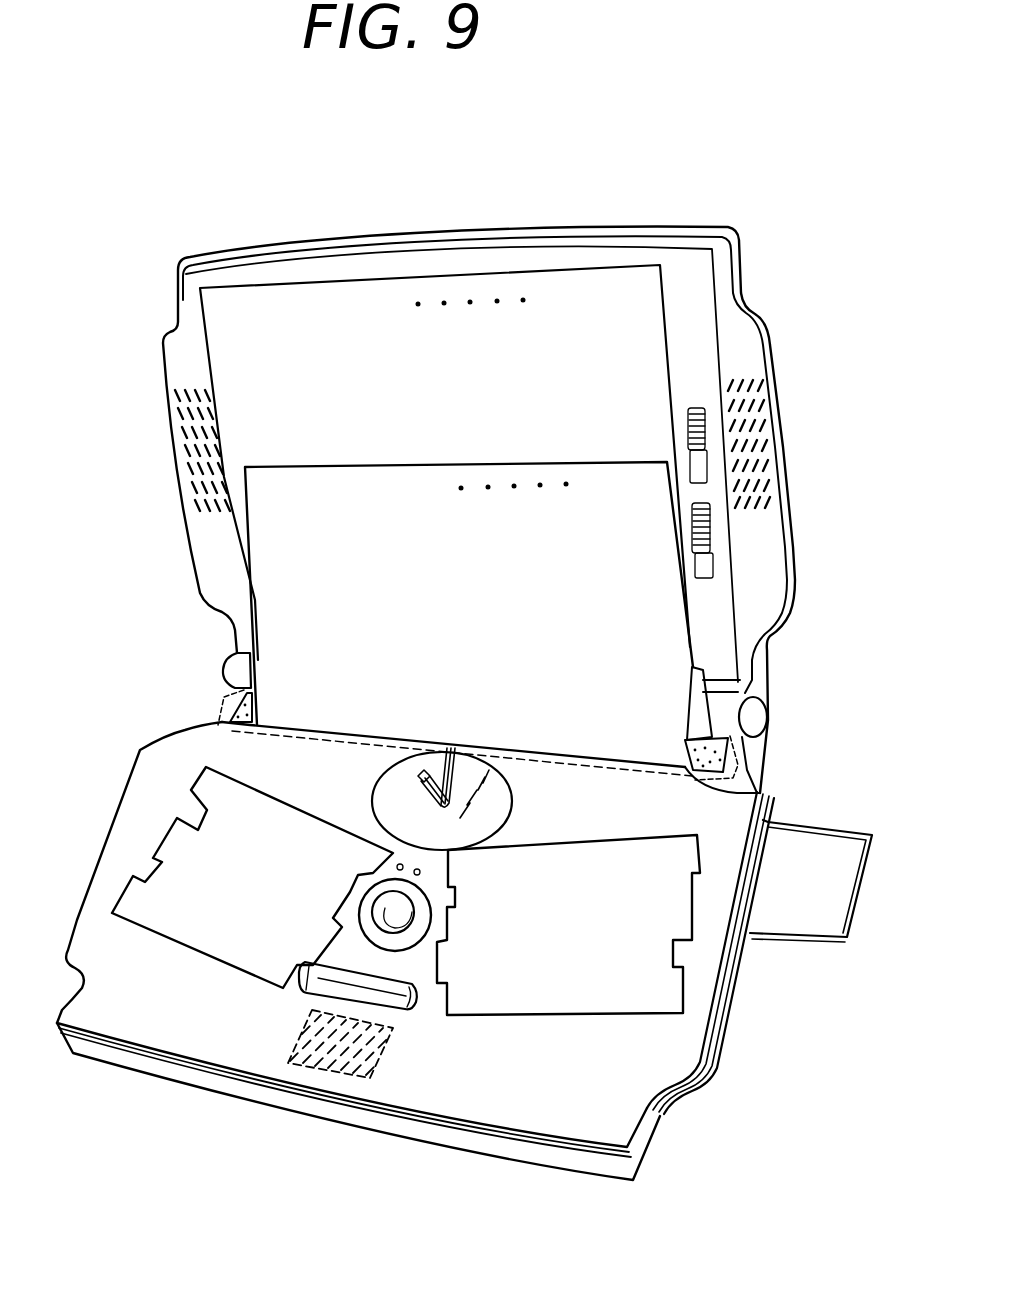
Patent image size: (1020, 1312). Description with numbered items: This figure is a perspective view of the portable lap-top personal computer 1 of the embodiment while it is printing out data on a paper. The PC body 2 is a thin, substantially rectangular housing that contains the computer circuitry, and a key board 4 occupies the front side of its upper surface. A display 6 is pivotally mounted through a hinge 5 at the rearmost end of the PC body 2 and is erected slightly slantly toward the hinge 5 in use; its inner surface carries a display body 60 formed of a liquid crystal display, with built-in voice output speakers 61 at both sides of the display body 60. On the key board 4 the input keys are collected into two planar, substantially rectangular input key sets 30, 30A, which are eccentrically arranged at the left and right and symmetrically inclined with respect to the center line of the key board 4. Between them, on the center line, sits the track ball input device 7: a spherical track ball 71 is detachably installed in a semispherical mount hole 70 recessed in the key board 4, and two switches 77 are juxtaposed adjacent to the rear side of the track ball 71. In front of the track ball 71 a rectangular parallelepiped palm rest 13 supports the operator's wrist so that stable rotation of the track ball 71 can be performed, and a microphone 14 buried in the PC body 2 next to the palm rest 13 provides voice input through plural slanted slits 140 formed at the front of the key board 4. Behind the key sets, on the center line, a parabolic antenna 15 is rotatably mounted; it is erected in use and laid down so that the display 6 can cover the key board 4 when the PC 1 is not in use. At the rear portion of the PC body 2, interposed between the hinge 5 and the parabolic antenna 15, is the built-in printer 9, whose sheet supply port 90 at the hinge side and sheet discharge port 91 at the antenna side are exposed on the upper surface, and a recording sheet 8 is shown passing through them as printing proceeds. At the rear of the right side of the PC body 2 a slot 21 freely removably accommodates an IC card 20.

The personal computer 1 is at (768, 180).
The PC body 2 is at (653, 1147).
The key board 4 is at (673, 1052).
The hinge 5 is at (727, 708).
The display 6 is at (737, 279).
The track ball input device 7 is at (418, 955).
The recording sheet 8 is at (278, 542).
The built-in printer 9 is at (742, 753).
The palm rest 13 is at (322, 978).
The microphone 14 is at (317, 1077).
The parabolic antenna 15 is at (513, 800).
The IC card 20 is at (848, 925).
The slot 21 is at (753, 890).
The input key set 30 is at (207, 788).
The input key set 30A is at (670, 987).
The display body 60 is at (647, 360).
The voice output speakers 61 is at (191, 444).
The mount hole 70 is at (423, 913).
The track ball 71 is at (385, 908).
The switches 77 is at (395, 860).
The sheet supply port 90 is at (768, 717).
The sheet discharge port 91 is at (760, 793).
The slits 140 is at (360, 1067).